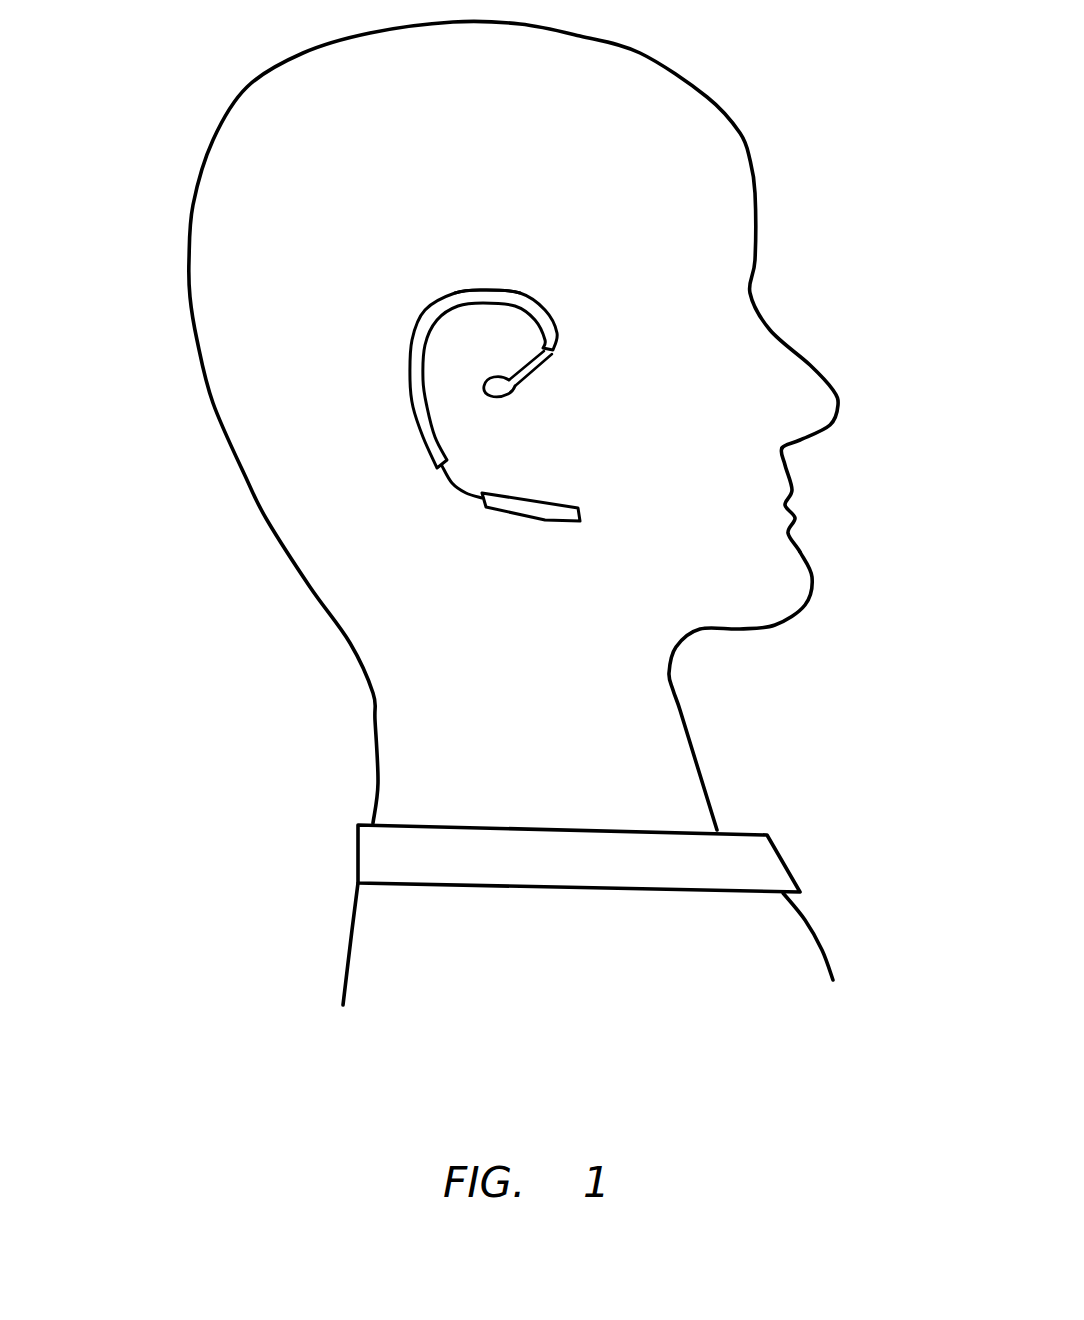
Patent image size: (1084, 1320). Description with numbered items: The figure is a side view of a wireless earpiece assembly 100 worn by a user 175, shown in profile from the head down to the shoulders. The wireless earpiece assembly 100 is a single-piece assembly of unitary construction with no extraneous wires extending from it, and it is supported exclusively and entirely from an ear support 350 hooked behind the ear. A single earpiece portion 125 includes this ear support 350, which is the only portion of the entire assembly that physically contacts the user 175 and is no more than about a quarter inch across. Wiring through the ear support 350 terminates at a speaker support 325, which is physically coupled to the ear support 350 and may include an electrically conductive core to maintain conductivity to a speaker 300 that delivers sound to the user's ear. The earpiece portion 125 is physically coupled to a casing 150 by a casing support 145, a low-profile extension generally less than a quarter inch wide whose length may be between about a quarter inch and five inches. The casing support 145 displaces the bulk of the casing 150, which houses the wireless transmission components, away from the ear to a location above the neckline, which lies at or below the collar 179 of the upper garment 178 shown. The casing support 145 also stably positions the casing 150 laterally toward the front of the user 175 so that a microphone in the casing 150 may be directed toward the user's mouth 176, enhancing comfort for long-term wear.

The wireless earpiece assembly 100 is at (352, 396).
The earpiece portion 125 is at (460, 346).
The casing support 145 is at (452, 485).
The casing 150 is at (526, 513).
The user 175 is at (562, 425).
The mouth 176 is at (820, 490).
The upper garment 178 is at (602, 907).
The collar 179 is at (760, 860).
The speaker 300 is at (504, 392).
The speaker support 325 is at (540, 366).
The ear support 350 is at (498, 296).